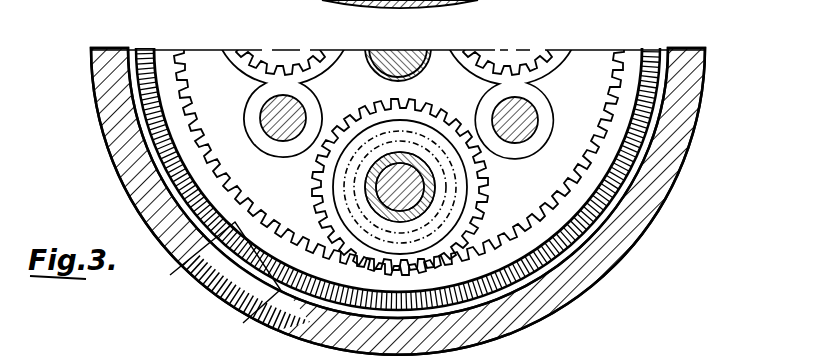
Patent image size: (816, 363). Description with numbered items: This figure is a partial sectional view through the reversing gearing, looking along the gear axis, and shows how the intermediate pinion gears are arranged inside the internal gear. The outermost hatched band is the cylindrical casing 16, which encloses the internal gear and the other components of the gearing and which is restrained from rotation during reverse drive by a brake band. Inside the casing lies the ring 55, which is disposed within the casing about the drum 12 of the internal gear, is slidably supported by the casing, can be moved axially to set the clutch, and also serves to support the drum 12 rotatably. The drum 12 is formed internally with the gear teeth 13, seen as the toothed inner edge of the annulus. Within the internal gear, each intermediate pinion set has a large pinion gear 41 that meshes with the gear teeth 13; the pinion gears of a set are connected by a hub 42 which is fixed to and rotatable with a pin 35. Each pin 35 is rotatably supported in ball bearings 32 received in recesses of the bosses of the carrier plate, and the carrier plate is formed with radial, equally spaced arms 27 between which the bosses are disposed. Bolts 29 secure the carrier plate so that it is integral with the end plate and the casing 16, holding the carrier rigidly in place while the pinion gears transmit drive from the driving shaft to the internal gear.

The drum 12 is at (209, 259).
The gear teeth 13 is at (267, 232).
The cylindrical casing 16 is at (689, 152).
The arms 27 is at (272, 146).
The bolts 29 is at (260, 109).
The ball bearings 32 is at (440, 200).
The pins 35 is at (408, 153).
The large pinion gear 41 is at (531, 58).
The hub 42 is at (363, 186).
The ring 55 is at (243, 320).